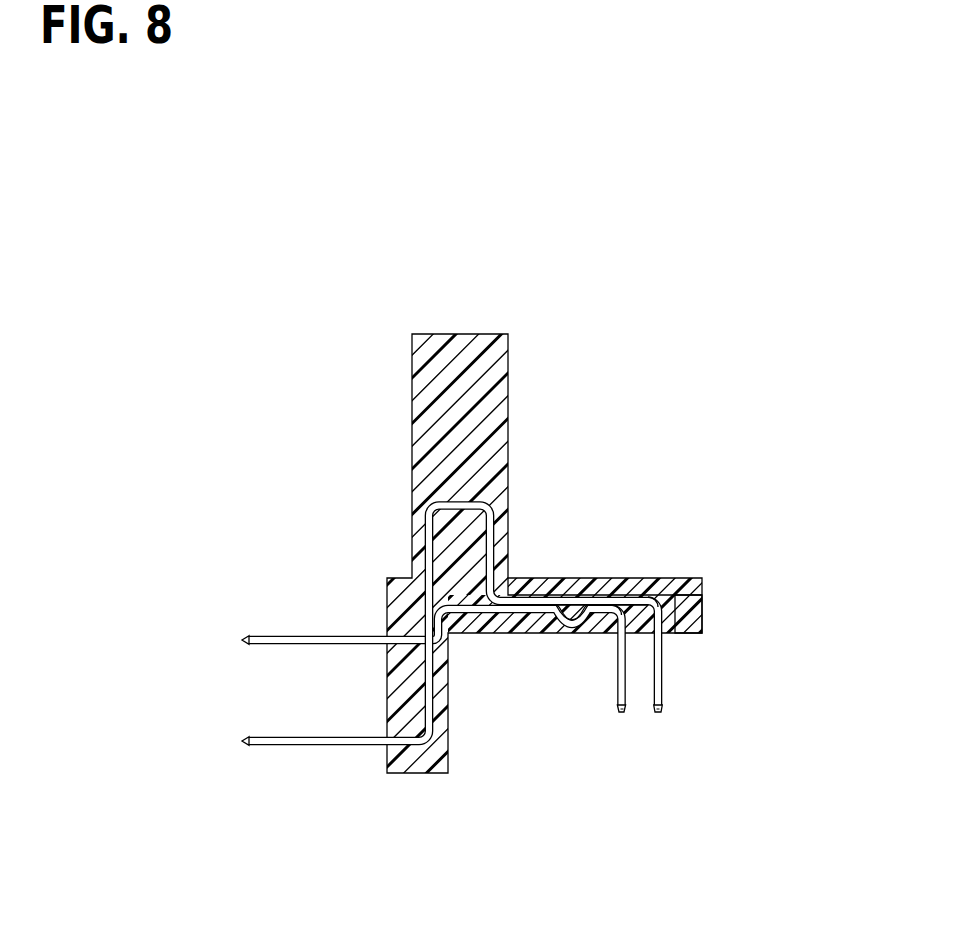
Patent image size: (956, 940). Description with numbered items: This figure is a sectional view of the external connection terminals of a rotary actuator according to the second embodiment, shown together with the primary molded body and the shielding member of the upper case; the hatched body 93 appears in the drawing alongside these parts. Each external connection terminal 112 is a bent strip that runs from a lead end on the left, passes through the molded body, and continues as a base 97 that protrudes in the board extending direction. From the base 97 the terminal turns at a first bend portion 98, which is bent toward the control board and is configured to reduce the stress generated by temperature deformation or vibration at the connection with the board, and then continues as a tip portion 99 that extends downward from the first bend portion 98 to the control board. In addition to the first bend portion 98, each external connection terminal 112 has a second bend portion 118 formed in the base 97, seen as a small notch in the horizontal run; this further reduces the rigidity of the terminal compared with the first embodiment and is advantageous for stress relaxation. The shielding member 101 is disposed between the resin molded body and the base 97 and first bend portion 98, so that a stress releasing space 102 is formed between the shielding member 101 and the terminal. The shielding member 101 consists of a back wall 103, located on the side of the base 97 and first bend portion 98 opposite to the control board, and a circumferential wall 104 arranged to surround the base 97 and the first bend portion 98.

The housing 93 is at (445, 430).
The base 97 is at (550, 613).
The bend 98 is at (610, 616).
The tip portion 99 is at (622, 713).
The shielding member 101 is at (780, 516).
The stress releasing space 102 is at (602, 600).
The back wall 103 is at (643, 590).
The circumferential wall 104 is at (690, 613).
The external connection terminal 112 is at (242, 640).
The second bend portion 118 is at (572, 630).